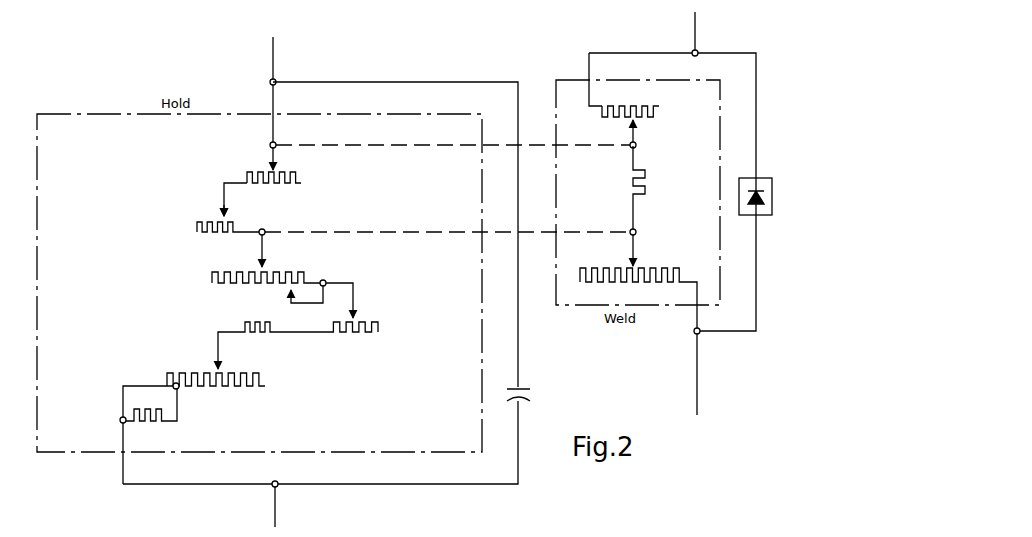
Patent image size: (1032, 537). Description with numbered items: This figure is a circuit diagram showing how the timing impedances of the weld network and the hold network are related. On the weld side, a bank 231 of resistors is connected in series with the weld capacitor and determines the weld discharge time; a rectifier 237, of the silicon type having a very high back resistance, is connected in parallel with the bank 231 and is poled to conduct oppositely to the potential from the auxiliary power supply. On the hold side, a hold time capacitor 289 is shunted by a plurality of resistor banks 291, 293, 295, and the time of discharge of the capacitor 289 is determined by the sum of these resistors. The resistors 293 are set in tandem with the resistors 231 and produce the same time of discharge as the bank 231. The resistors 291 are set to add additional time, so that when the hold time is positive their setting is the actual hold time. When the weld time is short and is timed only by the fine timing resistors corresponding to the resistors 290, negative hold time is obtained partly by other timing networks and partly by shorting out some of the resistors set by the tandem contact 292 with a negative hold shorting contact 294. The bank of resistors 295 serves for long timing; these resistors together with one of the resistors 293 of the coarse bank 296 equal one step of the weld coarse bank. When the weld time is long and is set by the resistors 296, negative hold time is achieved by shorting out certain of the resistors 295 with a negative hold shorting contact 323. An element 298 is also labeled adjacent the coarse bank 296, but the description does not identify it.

The bank of resistors 231 is at (692, 211).
The rectifier 237 is at (758, 182).
The capacitor 289 is at (534, 394).
The fine timing resistors 290 is at (212, 279).
The bank of resistors 291 is at (306, 359).
The tandem contact 292 is at (265, 268).
The bank of resistors 293 is at (391, 214).
The negative hold shorting contact 294 is at (288, 292).
The bank of resistors 295 is at (197, 226).
The coarse bank 296 is at (301, 173).
The relay contact 298 is at (247, 172).
The negative hold shorting contact 323 is at (228, 219).